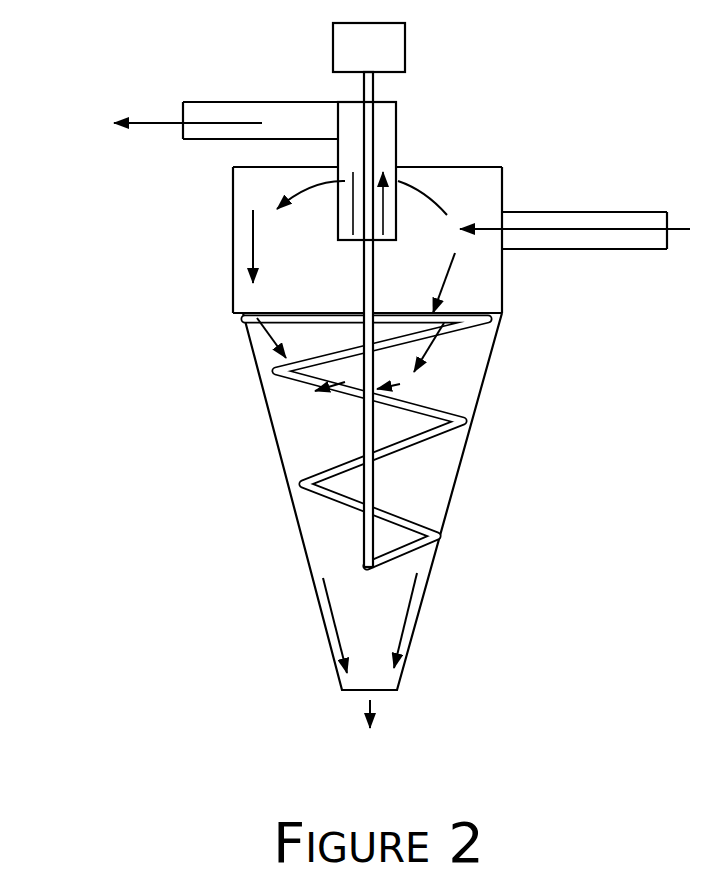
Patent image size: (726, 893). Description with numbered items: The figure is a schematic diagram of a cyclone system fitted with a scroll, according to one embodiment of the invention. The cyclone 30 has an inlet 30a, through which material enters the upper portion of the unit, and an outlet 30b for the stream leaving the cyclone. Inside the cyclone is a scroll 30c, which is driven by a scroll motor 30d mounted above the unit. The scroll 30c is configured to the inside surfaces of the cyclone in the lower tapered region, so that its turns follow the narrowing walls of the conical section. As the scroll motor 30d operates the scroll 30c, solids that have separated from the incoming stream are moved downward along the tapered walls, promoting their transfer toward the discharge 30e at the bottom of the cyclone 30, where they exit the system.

The cyclone 30 is at (402, 397).
The inlet 30a is at (583, 212).
The outlet 30b is at (263, 102).
The scroll 30c is at (465, 422).
The scroll motor 30d is at (369, 295).
The discharge 30e is at (369, 730).